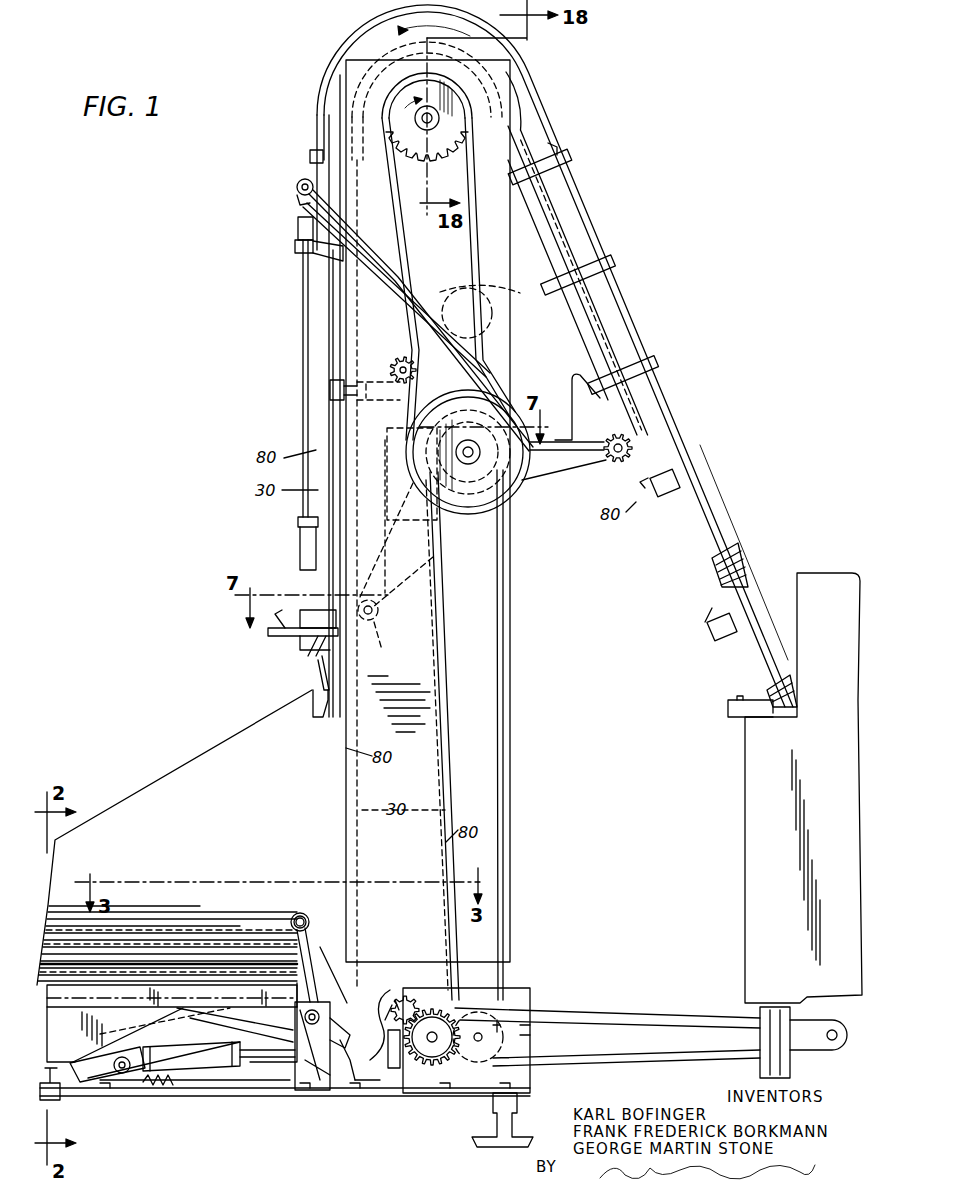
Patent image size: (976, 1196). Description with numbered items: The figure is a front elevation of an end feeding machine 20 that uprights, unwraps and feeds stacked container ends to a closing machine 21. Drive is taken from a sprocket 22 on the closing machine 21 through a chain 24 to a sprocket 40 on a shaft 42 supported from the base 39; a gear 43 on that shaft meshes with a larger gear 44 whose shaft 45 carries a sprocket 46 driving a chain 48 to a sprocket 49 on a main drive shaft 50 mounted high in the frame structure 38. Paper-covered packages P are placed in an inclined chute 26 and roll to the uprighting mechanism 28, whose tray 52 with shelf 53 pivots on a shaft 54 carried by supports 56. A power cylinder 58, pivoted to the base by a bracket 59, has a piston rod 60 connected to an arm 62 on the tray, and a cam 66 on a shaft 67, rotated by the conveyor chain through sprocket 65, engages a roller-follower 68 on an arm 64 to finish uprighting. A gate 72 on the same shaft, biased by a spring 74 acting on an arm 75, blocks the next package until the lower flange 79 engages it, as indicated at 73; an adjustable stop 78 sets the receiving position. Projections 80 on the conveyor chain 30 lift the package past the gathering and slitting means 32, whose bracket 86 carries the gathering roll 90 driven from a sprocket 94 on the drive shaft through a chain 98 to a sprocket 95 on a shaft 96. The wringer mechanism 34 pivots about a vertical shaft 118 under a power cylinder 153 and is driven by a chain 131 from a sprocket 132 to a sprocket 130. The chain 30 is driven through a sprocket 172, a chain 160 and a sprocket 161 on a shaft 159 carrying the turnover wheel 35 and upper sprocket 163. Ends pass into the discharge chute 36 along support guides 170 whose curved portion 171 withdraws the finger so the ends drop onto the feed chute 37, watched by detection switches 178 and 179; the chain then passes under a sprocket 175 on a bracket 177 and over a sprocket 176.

The turnover wheel 35 is at (372, 38).
The upper sprocket 163 is at (336, 70).
The projections 80 is at (324, 108).
The end feeding machine 20 is at (258, 424).
The chain 160 is at (402, 222).
The shaft 159 is at (421, 118).
The sprocket 161 is at (465, 160).
The vertically disposed shaft 118 is at (300, 345).
The wringer mechanism 34 is at (292, 318).
The sprocket 130 is at (300, 196).
The chain 131 is at (386, 326).
The power cylinder 153 is at (318, 376).
The discharge chute 36 is at (615, 306).
The support guides 170 is at (616, 344).
The conveyor chain 30 is at (560, 226).
The curved portion 171 is at (634, 400).
The sprocket 176 is at (508, 296).
The sprocket 175 is at (608, 432).
The bracket 177 is at (572, 472).
The feed chute 37 is at (706, 562).
The detection switch 178 is at (652, 498).
The detector switch 179 is at (706, 628).
The shaft 50 is at (502, 500).
The sprocket 49 is at (518, 482).
The sprocket 172 is at (486, 505).
The sprocket 132 is at (440, 386).
The sprocket 94 is at (418, 494).
The chain 98 is at (440, 540).
The sprocket 95 is at (384, 608).
The shaft 96 is at (384, 640).
The frame structure 38 is at (512, 782).
The chain 48 is at (512, 698).
The gathering and slitting means 32 is at (266, 634).
The bracket 86 is at (278, 645).
The gathering roll 90 is at (312, 656).
The inclined chute 26 is at (163, 772).
The package P is at (125, 975).
The tray 52 is at (155, 985).
The shelf 53 is at (195, 990).
The lower flange 79 is at (172, 1034).
The engagement point 73 is at (146, 1036).
The power cylinder 58 is at (228, 1071).
The piston rod 60 is at (268, 1070).
The bracket 59 is at (132, 1074).
The gate 72 is at (92, 1082).
The spring 74 is at (170, 1088).
The adjustable stop 78 is at (62, 1092).
The base 39 is at (118, 1095).
The uprighting mechanism 28 is at (216, 1128).
The supports 56 is at (306, 1092).
The shaft 54 is at (306, 1012).
The arm 62 is at (342, 990).
The arm 64 is at (290, 924).
The roller-follower 68 is at (298, 912).
The cam 66 is at (378, 985).
The shaft 67 is at (392, 1000).
The gear 43 is at (428, 1000).
The sprocket 65 is at (392, 1070).
The arm 75 is at (352, 1086).
The shaft 42 is at (430, 1045).
The sprocket 40 is at (444, 1068).
The gear 44 is at (486, 1080).
The shaft 45 is at (482, 1040).
The sprocket 46 is at (532, 1026).
The chain 24 is at (710, 1016).
The sprocket 22 is at (840, 1048).
The closing machine 21 is at (756, 874).